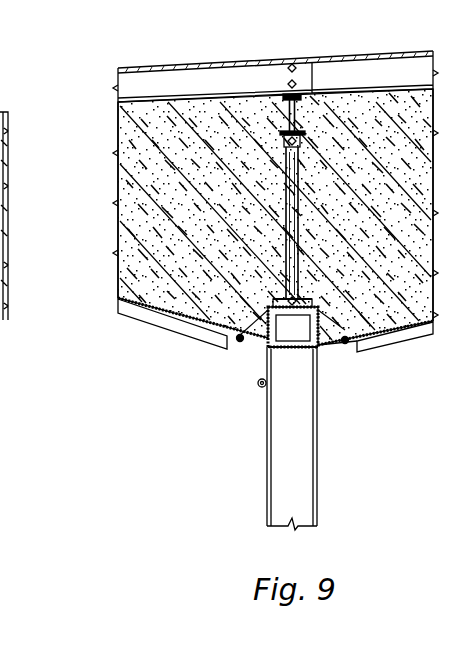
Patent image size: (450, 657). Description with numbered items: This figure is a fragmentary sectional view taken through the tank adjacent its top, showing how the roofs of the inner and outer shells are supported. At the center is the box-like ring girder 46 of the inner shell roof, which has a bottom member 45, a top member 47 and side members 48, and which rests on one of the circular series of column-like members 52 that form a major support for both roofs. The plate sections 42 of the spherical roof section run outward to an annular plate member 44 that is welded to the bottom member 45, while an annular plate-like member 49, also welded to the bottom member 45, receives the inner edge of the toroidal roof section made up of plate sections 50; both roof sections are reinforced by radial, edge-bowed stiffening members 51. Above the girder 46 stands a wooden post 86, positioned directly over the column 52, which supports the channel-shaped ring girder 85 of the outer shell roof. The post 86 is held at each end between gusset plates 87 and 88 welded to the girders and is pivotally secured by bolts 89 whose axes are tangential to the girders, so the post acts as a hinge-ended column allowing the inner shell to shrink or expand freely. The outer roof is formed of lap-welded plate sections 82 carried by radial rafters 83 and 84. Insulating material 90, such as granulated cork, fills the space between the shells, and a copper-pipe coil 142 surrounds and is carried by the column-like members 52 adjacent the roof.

The roof plate section 82 is at (342, 56).
The radial rafter 83 is at (410, 71).
The radial rafter 84 is at (153, 88).
The channel-shaped ring girder 85 is at (283, 117).
The wooden post 86 is at (283, 212).
The gusset plate 87 is at (308, 297).
The gusset plate 88 is at (300, 138).
The bolt 89 is at (287, 138).
The insulating material 90 is at (449, 213).
The plate section 42 is at (377, 328).
The annular plate member 44 is at (335, 343).
The bottom member 45 is at (277, 350).
The box-like ring girder 46 is at (288, 328).
The top member 47 is at (322, 312).
The side member 48 is at (266, 320).
The annular plate-like member 49 is at (241, 341).
The plate section 50 is at (155, 306).
The stiffening member 51 is at (398, 332).
The column-like member 52 is at (296, 458).
The coil 142 is at (259, 386).